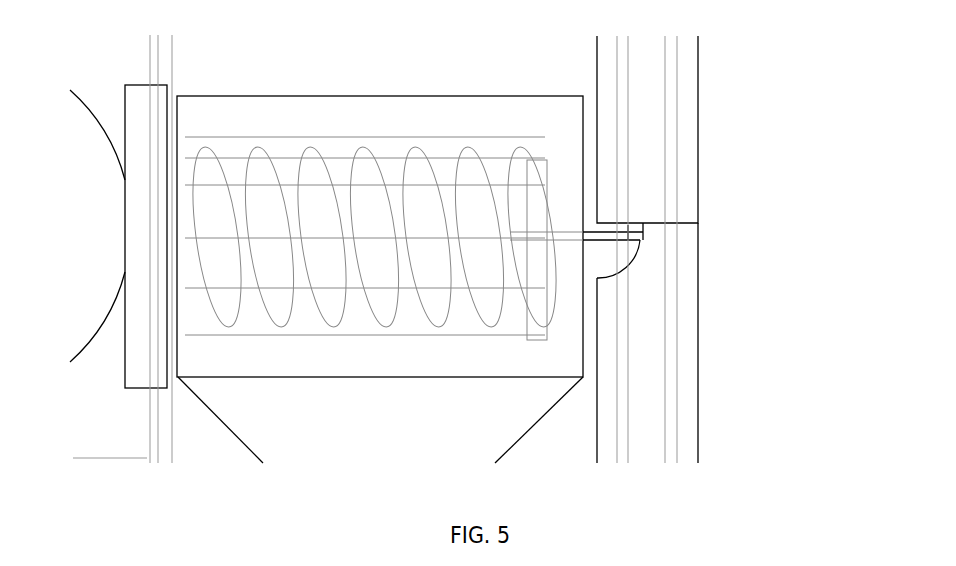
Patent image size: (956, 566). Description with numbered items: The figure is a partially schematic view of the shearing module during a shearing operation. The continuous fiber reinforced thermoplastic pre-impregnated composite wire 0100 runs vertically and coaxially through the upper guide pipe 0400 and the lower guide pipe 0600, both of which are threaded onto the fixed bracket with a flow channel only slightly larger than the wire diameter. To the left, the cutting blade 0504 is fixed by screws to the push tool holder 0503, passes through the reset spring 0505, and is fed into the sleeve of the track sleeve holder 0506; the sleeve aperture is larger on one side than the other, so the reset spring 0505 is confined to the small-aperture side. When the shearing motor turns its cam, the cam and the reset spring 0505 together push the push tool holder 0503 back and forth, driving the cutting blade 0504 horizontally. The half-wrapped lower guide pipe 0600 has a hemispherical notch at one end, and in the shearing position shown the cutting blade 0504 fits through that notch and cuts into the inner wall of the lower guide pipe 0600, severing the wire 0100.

The continuous fiber reinforced thermoplastic resin matrix pre-impregnated composite 0100 is at (657, 218).
The upper guide pipe 0400 is at (693, 90).
The push tool holder 0503 is at (140, 103).
The cutting blade 0504 is at (580, 254).
The reset spring 0505 is at (375, 150).
The track sleeve holder 0506 is at (278, 103).
The lower guide pipe 0600 is at (688, 408).